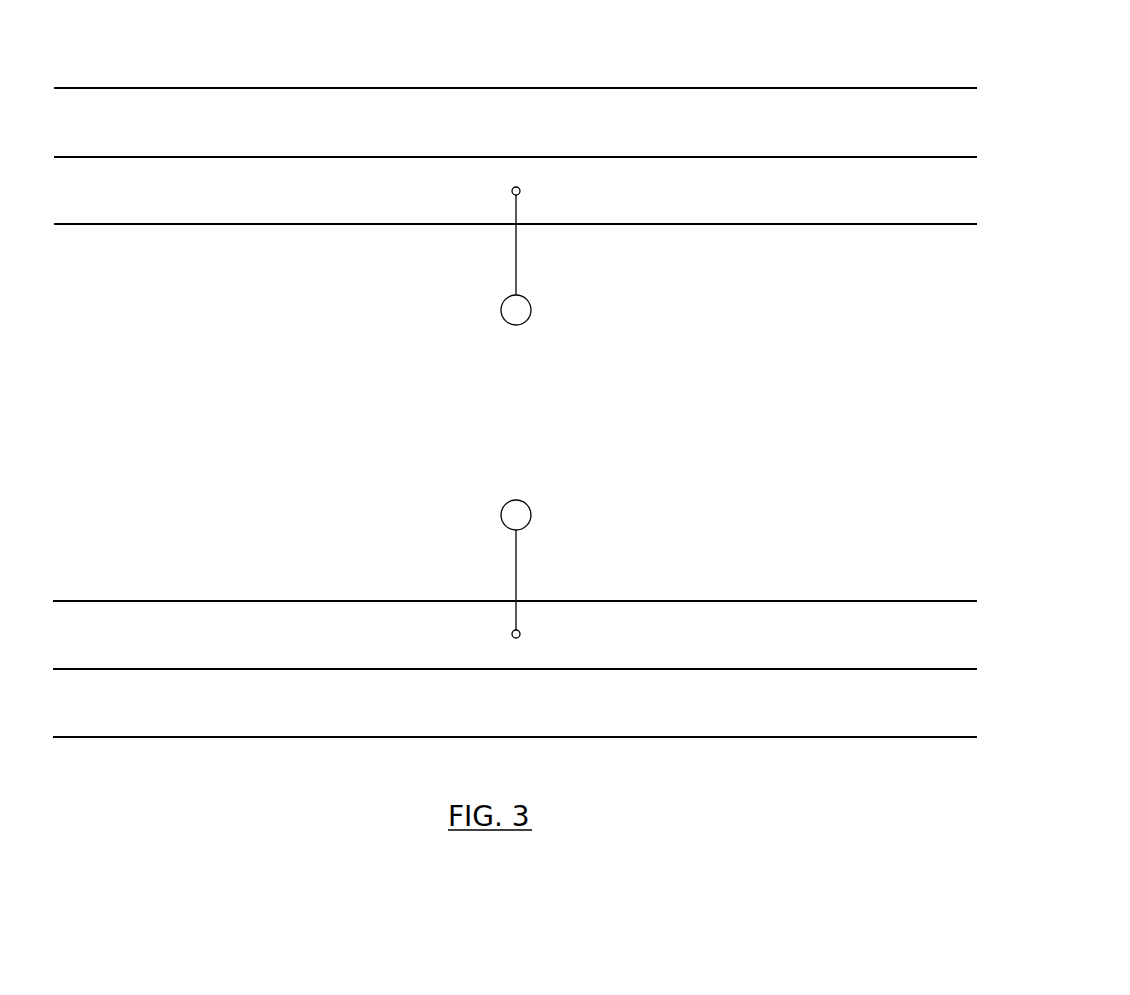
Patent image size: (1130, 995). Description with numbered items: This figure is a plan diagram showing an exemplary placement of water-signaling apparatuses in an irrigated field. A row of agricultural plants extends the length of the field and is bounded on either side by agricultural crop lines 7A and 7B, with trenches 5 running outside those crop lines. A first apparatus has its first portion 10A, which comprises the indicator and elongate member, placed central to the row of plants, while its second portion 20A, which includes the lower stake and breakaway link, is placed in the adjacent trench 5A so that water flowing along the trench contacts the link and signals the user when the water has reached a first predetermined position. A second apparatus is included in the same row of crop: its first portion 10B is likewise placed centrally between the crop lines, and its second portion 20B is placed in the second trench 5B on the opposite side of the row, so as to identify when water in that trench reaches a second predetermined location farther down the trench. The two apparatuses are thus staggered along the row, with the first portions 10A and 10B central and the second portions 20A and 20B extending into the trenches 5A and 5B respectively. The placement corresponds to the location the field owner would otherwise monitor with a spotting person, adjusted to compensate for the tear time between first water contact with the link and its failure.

The trench 5 is at (969, 117).
The agricultural crop line 7A is at (969, 155).
The trench 5A is at (980, 195).
The second portion 20A is at (525, 194).
The first portion 10A is at (542, 318).
The first portion 10B is at (542, 509).
The second portion 20B is at (533, 633).
The second trench 5B is at (962, 628).
The agricultural crop line 7B is at (964, 667).